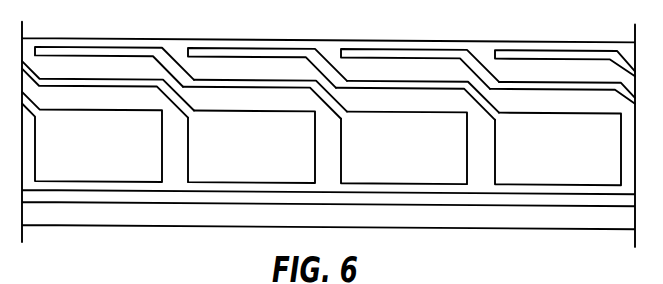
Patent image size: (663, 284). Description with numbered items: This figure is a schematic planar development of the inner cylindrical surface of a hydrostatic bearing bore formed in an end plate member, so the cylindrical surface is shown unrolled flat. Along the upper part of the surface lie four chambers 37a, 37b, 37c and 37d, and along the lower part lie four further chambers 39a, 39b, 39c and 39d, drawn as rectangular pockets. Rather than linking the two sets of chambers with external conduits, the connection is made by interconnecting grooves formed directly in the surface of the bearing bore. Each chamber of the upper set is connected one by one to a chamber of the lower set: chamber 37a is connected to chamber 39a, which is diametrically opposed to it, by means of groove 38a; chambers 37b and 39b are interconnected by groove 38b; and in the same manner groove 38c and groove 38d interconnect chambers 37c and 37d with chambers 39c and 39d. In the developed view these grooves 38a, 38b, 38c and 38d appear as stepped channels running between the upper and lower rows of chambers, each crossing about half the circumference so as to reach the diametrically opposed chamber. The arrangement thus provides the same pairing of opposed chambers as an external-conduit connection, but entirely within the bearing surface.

The chamber 37a is at (387, 52).
The chamber 37b is at (525, 50).
The chamber 37c is at (100, 54).
The chamber 37d is at (229, 51).
The groove 38a is at (578, 86).
The groove 38b is at (117, 80).
The groove 38c is at (228, 83).
The groove 38d is at (420, 82).
The chamber 39a is at (73, 178).
The chamber 39b is at (238, 176).
The chamber 39c is at (372, 176).
The chamber 39d is at (530, 174).